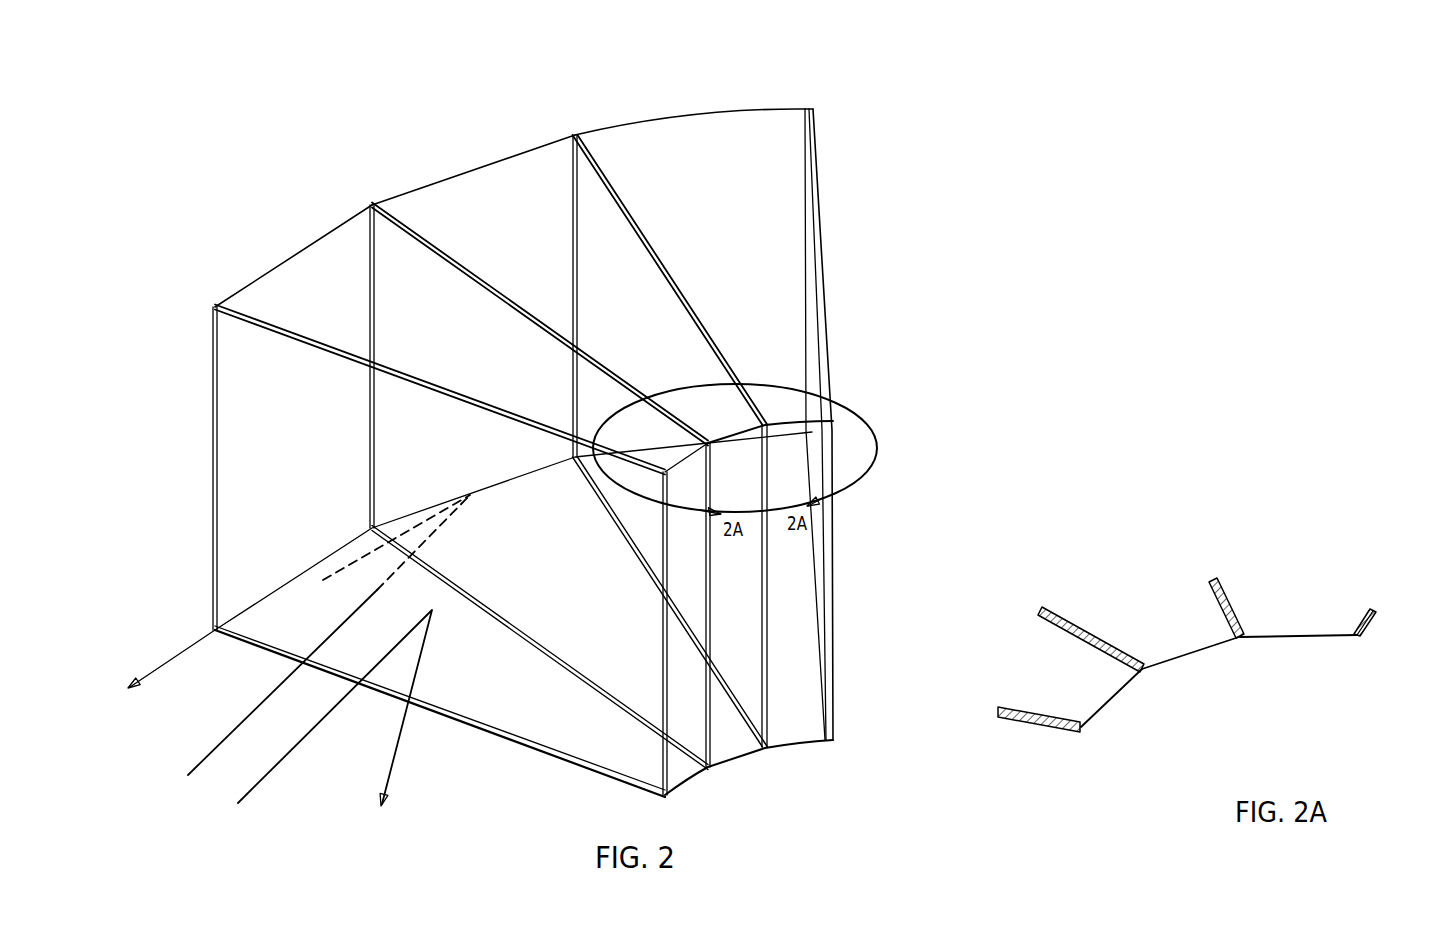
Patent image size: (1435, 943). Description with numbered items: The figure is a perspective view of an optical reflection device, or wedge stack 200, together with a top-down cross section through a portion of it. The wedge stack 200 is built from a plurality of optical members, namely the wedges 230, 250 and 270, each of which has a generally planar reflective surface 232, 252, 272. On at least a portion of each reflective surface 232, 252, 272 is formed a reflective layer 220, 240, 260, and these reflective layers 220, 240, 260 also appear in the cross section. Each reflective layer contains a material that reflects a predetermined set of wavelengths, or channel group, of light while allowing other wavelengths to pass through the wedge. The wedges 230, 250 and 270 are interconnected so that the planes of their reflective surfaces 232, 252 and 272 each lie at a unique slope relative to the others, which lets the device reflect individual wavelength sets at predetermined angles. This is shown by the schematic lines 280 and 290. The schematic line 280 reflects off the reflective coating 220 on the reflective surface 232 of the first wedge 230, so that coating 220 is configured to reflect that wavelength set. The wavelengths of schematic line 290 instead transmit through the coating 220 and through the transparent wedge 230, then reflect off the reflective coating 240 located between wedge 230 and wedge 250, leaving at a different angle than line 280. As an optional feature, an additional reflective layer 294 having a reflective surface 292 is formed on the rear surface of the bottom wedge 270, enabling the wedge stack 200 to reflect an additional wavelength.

In FIG. 2, the wedge stack 200 is at (183, 147).
In FIG. 2, the reflective layer 220 is at (455, 385).
In FIG. 2A, the reflective layer 220 is at (1085, 733).
In FIG. 2, the wedge 230 is at (318, 282).
In FIG. 2A, the wedge 230 is at (1100, 697).
In FIG. 2, the reflective surface 232 is at (375, 350).
In FIG. 2, the reflective layer 240 is at (487, 283).
In FIG. 2A, the reflective layer 240 is at (1150, 675).
In FIG. 2, the wedge 250 is at (480, 195).
In FIG. 2A, the wedge 250 is at (1163, 640).
In FIG. 2, the reflective surface 252 is at (437, 247).
In FIG. 2, the reflective layer 260 is at (668, 268).
In FIG. 2A, the reflective layer 260 is at (1243, 637).
In FIG. 2, the wedge 270 is at (700, 138).
In FIG. 2A, the wedge 270 is at (1267, 623).
In FIG. 2, the reflective surface 272 is at (638, 218).
In FIG. 2, the schematic line 280 is at (257, 787).
In FIG. 2, the schematic line 290 is at (195, 767).
In FIG. 2, the reflective surface 292 is at (828, 318).
In FIG. 2A, the reflective surface 292 is at (1370, 627).
In FIG. 2, the additional reflective layer 294 is at (825, 355).
In FIG. 2A, the additional reflective layer 294 is at (1358, 640).